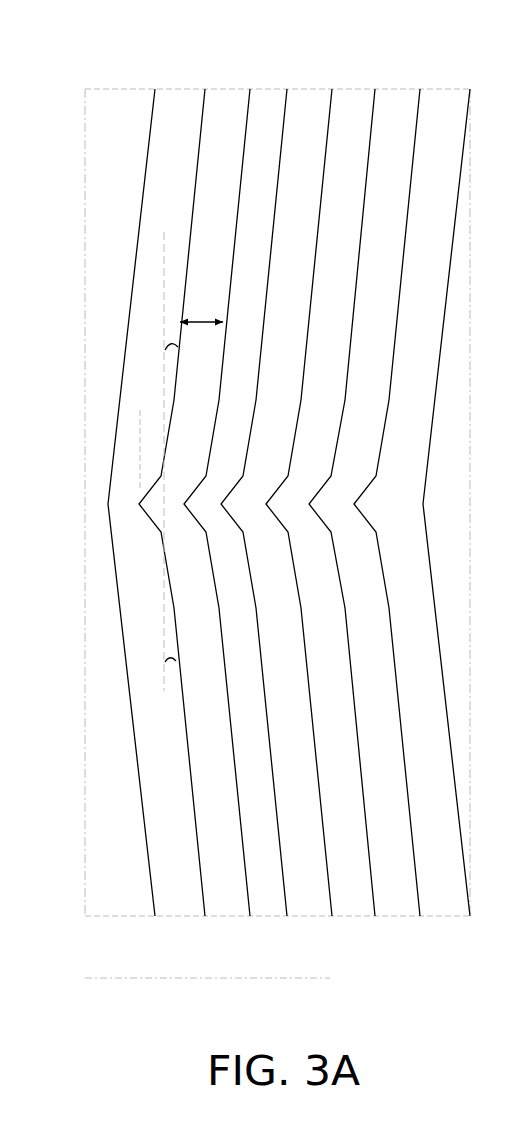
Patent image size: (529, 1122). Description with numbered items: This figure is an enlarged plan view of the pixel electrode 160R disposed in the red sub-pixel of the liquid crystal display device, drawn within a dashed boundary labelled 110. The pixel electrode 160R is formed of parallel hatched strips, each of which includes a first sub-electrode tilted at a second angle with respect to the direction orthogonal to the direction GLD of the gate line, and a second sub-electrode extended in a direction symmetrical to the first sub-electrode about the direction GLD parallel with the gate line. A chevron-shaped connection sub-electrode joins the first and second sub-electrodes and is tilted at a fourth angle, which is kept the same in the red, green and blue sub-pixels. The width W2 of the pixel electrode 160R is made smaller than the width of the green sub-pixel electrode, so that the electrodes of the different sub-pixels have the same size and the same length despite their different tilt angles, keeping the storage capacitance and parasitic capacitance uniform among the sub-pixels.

The substrate 110 is at (123, 143).
The pixel electrode 160R is at (226, 117).
The width of the pixel electrode W2 is at (202, 321).
The direction of the gate line GLD is at (182, 978).